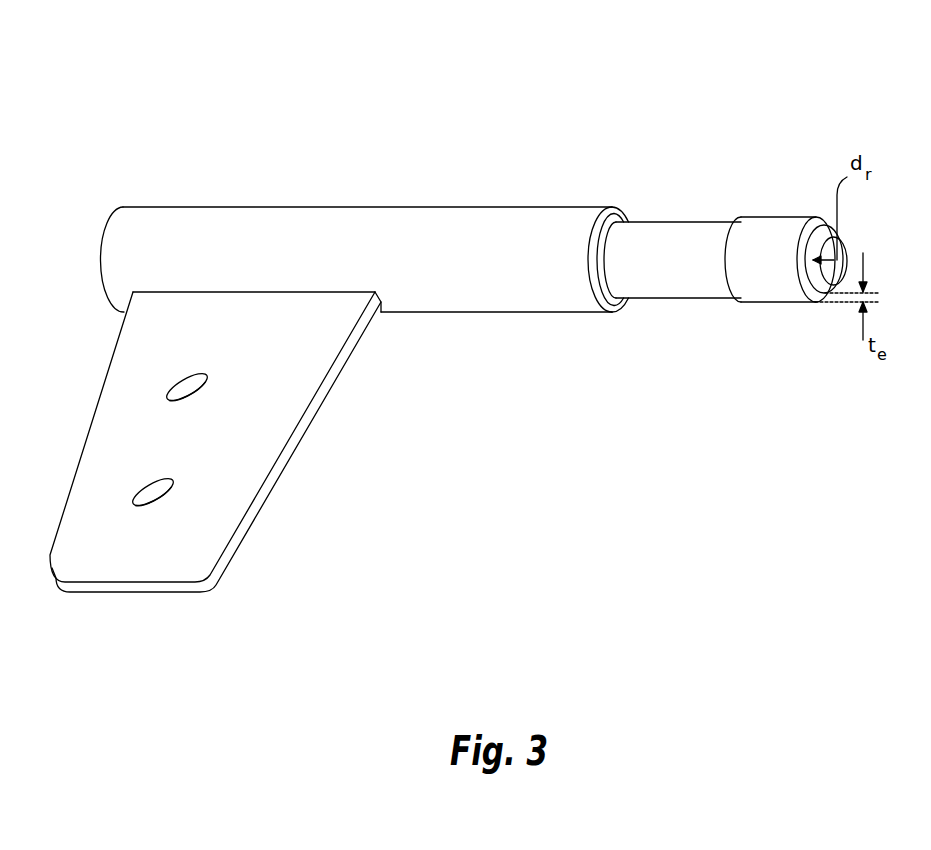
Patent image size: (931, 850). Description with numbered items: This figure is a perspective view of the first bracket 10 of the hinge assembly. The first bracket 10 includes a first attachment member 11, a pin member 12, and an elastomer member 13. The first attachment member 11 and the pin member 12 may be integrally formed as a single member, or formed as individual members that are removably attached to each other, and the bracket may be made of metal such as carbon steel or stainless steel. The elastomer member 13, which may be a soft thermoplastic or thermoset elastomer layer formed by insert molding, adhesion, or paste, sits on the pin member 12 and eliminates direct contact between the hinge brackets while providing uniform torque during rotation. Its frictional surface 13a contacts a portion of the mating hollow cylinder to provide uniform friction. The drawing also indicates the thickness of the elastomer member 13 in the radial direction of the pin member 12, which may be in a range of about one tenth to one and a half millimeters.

The first bracket 10 is at (452, 36).
The first attachment member 11 is at (185, 543).
The pin member 12 is at (685, 273).
The elastomer member 13 is at (768, 228).
The frictional surface 13a is at (790, 265).